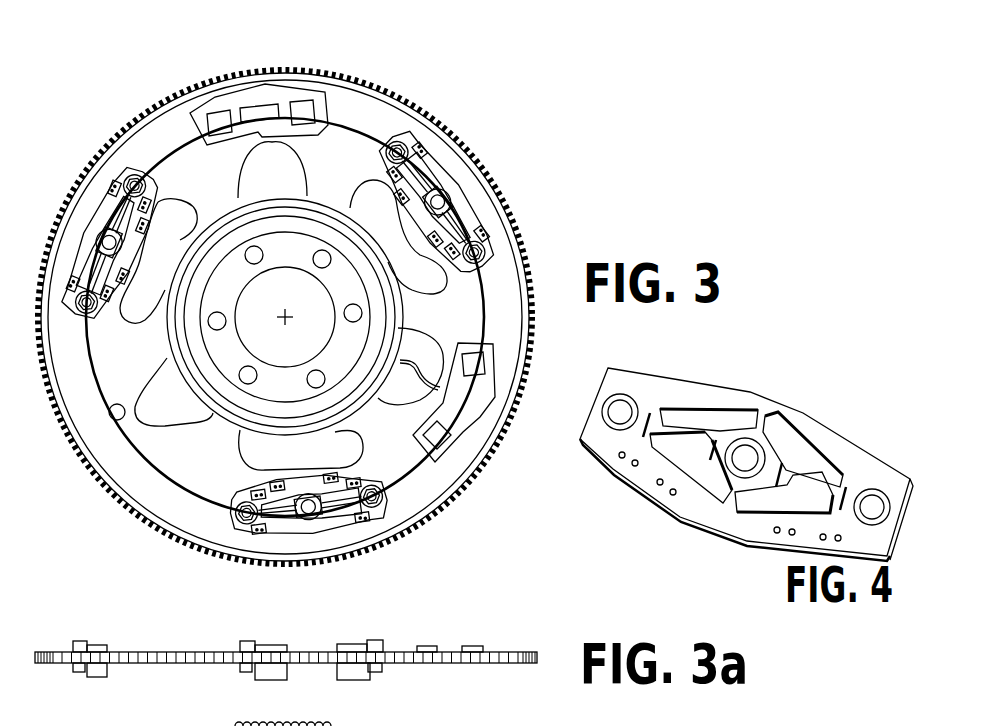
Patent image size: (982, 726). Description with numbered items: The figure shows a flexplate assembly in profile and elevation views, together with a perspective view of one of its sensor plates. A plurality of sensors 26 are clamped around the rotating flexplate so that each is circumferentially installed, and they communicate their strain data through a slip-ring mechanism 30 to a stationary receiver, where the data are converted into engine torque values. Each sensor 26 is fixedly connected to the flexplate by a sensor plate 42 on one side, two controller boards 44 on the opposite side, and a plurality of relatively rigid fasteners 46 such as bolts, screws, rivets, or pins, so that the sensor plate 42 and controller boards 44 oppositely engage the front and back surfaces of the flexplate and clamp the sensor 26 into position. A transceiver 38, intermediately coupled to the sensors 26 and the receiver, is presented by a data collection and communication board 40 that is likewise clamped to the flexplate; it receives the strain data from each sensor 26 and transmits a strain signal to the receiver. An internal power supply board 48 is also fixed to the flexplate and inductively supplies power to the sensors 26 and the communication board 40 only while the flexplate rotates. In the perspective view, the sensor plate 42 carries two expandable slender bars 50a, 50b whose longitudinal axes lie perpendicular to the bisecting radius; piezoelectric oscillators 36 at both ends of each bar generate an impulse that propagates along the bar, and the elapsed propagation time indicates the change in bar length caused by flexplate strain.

In FIG. 3, the sensor 26 is at (110, 162).
In FIG. 3, the slip-ring mechanism 30 is at (313, 203).
In FIG. 3, the piezoelectric oscillator 36 is at (433, 130).
In FIG. 3, the transceiver 38 is at (238, 86).
In FIG. 3, the data collection and communication board 40 is at (270, 97).
In FIG. 4, the sensor plate 42 is at (765, 402).
In FIG. 3a, the controller board 44 is at (355, 680).
In FIG. 3a, the fastener 46 is at (375, 640).
In FIG. 3, the internal power supply board 48 is at (477, 417).
In FIG. 4, the expandable slender bar 50a is at (670, 400).
In FIG. 4, the expandable slender bar 50b is at (810, 487).